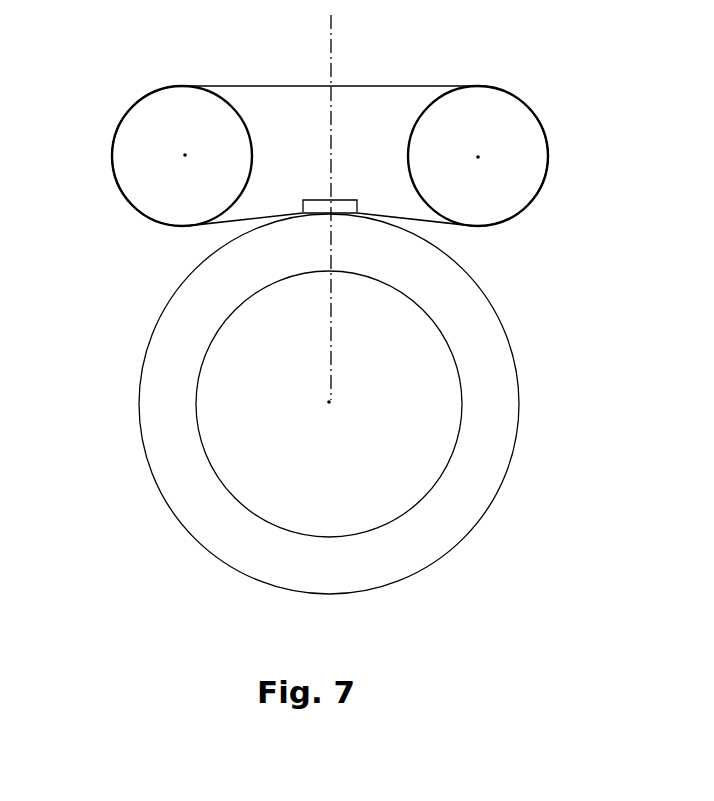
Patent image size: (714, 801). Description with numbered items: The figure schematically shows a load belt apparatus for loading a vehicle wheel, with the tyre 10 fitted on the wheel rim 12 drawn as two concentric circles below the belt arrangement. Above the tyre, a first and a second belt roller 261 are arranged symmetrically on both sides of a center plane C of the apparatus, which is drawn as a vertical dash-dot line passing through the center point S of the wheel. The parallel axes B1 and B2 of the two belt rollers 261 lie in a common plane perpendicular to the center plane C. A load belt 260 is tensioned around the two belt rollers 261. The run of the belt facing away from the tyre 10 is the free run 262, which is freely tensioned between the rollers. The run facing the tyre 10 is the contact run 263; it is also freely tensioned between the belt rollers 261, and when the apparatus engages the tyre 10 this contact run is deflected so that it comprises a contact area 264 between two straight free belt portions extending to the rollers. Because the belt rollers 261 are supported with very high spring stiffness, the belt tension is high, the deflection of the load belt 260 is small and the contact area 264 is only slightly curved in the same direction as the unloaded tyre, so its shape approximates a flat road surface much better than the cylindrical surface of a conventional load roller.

The tyre 10 is at (510, 366).
The wheel rim 12 is at (455, 447).
The load belt 260 is at (520, 97).
The belt roller 261 is at (160, 112).
The free run 262 is at (305, 86).
The contact run 263 is at (435, 223).
The contact area 264 is at (303, 199).
The center plane C is at (331, 30).
The center of ring S is at (329, 402).
The axis of first belt roller B1 is at (185, 155).
The axis of second belt roller B2 is at (478, 157).